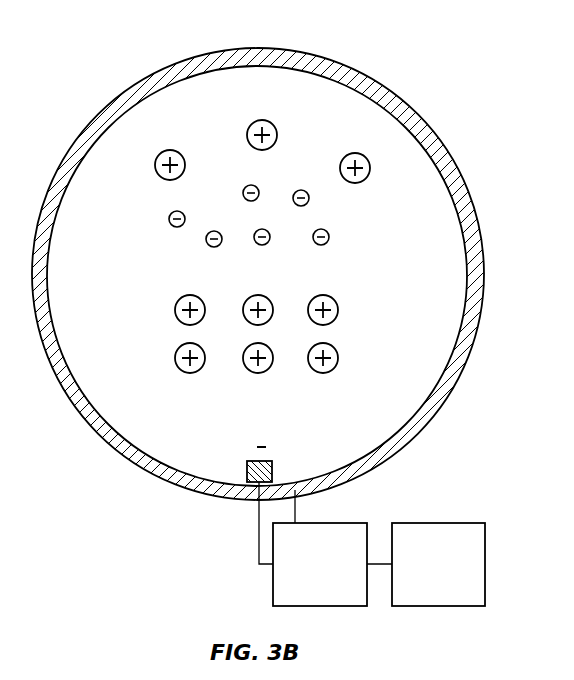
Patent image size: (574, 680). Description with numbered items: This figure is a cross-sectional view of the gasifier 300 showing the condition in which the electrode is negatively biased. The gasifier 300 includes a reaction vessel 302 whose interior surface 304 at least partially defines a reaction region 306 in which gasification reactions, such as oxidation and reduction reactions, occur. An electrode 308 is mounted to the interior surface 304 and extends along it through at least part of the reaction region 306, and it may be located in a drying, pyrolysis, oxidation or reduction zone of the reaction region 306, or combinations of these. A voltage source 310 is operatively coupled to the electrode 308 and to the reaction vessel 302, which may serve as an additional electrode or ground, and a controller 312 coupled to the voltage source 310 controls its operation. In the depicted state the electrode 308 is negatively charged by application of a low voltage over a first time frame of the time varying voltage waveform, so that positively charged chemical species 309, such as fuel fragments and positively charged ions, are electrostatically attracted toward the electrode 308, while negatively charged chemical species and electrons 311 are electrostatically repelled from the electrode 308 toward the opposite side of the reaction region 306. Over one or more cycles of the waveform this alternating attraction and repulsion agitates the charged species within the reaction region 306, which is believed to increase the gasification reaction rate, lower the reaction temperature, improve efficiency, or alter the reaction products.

The gasifier 300 is at (392, 48).
The reaction vessel 302 is at (393, 90).
The interior surface 304 is at (428, 148).
The reaction region 306 is at (426, 240).
The electrode 308 is at (276, 462).
The positively charged chemical species 309 is at (336, 306).
The voltage source 310 is at (320, 564).
The negatively charged chemical species and electrons 311 is at (182, 155).
The controller 312 is at (438, 564).